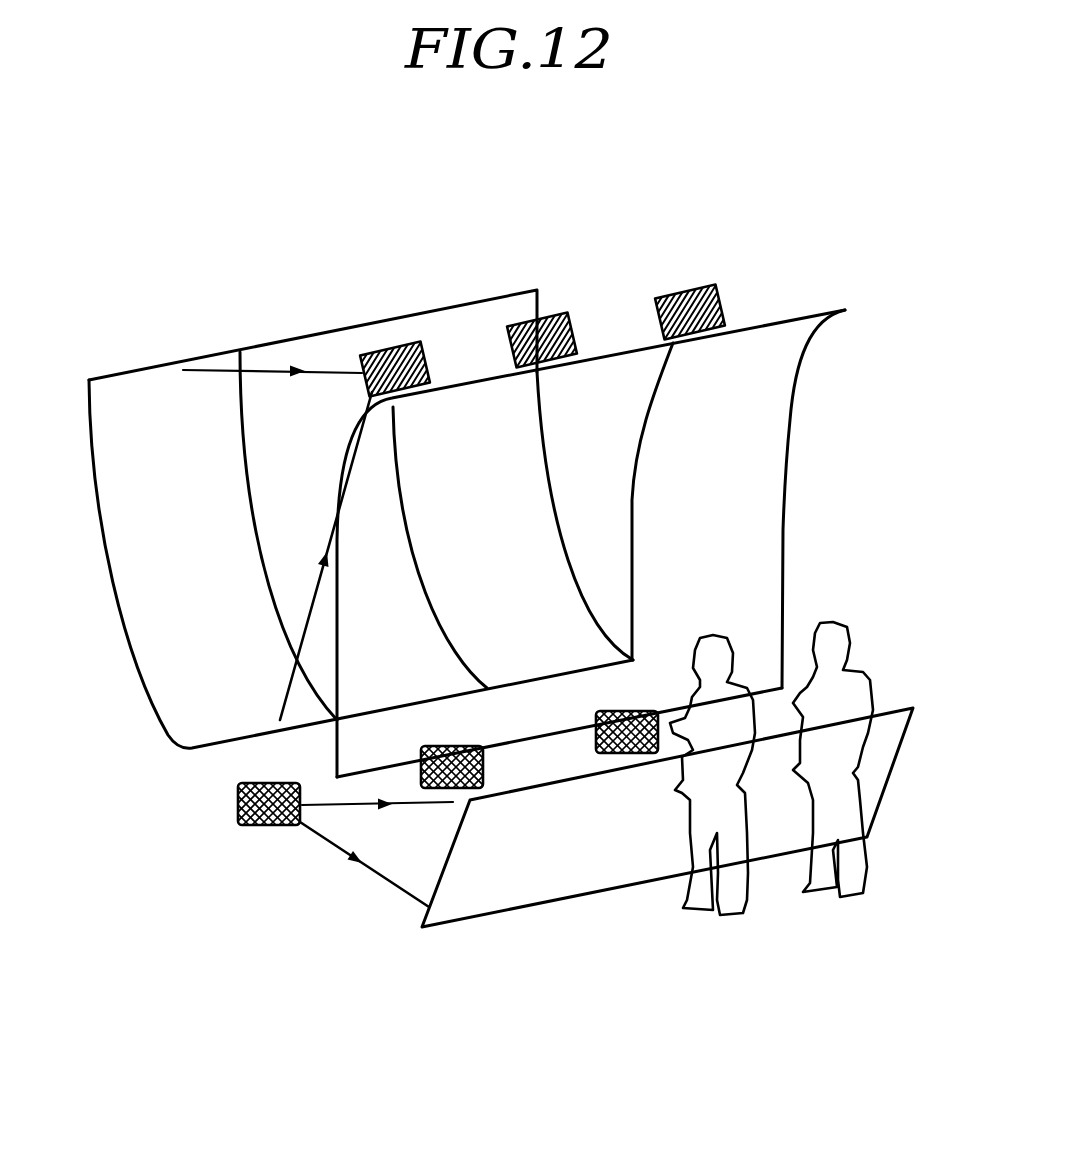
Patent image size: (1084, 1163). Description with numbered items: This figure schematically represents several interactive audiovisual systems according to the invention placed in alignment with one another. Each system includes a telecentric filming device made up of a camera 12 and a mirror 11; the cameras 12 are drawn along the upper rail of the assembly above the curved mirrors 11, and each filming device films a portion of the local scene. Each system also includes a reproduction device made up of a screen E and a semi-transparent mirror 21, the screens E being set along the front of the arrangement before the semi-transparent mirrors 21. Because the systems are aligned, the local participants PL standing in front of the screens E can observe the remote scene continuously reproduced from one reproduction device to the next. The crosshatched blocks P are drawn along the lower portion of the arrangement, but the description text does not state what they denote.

The mirror 11 is at (447, 328).
The camera 12 is at (657, 299).
The semi-transparent mirror 21 is at (613, 582).
The projector P is at (422, 789).
The screen E is at (525, 888).
The players PL is at (840, 900).